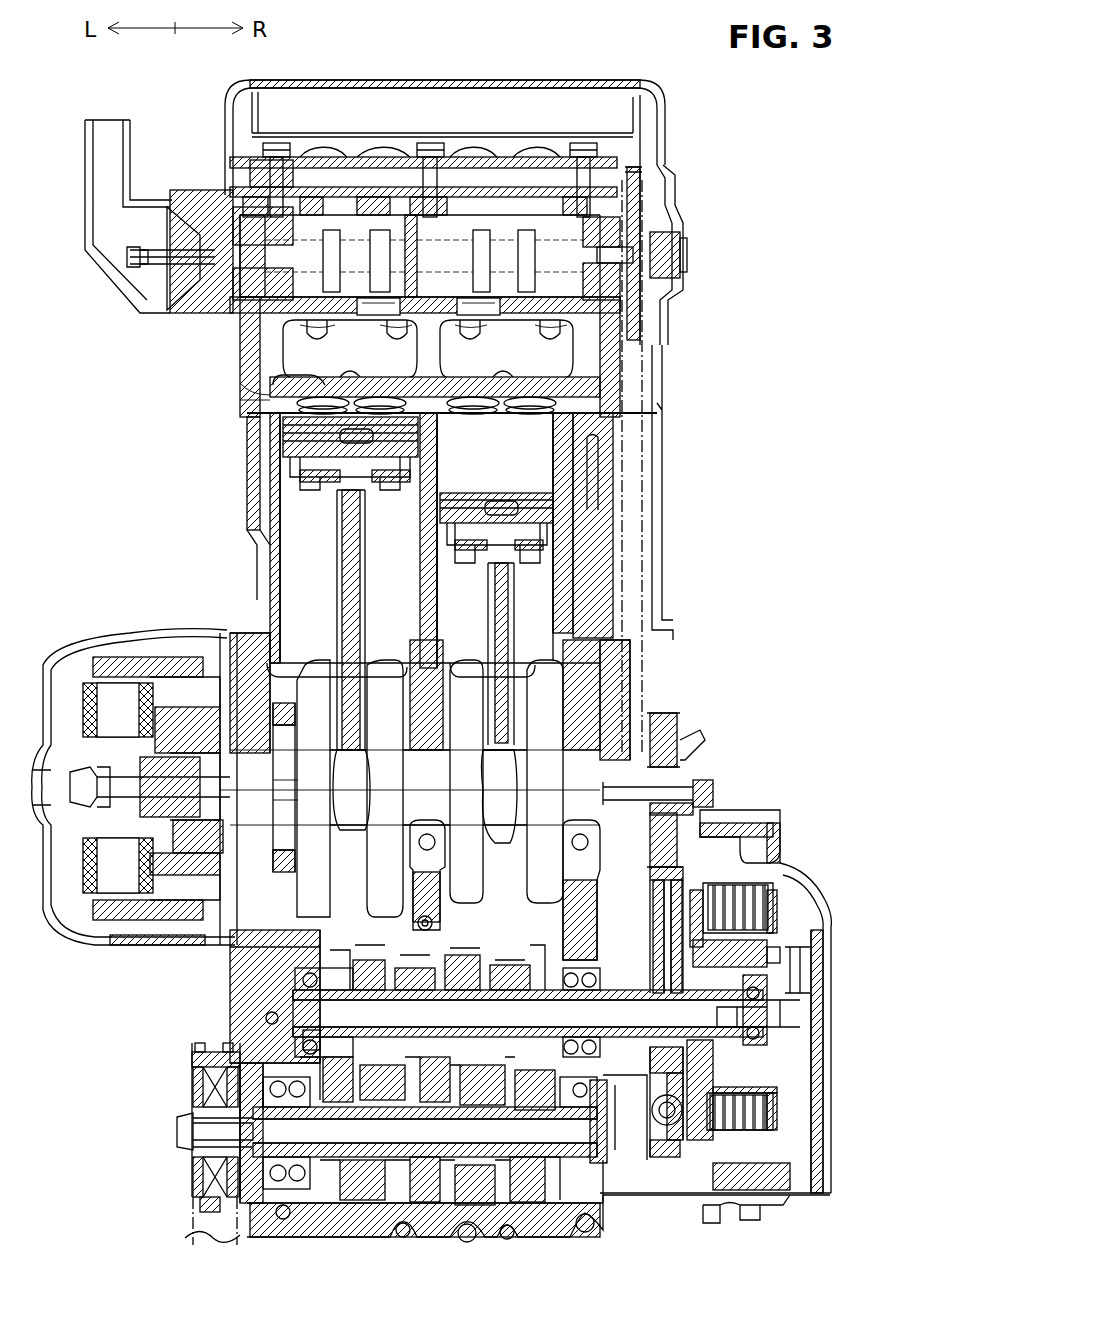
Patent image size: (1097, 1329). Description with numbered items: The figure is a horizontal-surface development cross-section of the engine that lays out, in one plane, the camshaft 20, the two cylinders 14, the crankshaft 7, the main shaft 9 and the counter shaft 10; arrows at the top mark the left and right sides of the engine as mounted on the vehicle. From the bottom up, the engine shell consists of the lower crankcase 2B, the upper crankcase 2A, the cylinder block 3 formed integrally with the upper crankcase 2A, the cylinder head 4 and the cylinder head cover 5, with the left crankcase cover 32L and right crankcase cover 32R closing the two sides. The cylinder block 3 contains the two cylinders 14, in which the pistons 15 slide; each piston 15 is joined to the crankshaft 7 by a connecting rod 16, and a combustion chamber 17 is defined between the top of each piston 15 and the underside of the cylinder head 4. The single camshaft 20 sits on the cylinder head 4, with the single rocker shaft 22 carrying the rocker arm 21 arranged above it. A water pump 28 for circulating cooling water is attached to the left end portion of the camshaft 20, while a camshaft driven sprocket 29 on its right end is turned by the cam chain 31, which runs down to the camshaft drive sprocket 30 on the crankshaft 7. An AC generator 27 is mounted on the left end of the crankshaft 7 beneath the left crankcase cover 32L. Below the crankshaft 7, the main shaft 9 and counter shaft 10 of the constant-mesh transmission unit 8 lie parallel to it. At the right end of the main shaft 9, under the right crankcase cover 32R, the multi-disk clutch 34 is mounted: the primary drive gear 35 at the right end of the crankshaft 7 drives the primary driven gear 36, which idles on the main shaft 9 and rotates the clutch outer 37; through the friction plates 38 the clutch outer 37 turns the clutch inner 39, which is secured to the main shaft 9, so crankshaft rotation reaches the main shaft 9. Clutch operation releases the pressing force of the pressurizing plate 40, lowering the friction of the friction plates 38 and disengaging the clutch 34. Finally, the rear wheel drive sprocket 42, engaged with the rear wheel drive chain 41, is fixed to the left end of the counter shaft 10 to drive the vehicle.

The upper crankcase 2A is at (243, 633).
The lower crankcase 2B is at (260, 957).
The cylinder block 3 is at (270, 507).
The cylinder head 4 is at (242, 350).
The cylinder head cover 5 is at (337, 80).
The crankshaft 7 is at (570, 775).
The transmission unit 8 is at (624, 1150).
The main shaft 9 is at (273, 997).
The counter shaft 10 is at (243, 1115).
The cylinders 14 is at (403, 617).
The piston 15 is at (303, 430).
The connecting rod 16 is at (347, 547).
The combustion chamber 17 is at (270, 387).
The camshaft 20 is at (550, 270).
The rocker arm 21 is at (490, 155).
The rocker shaft 22 is at (548, 155).
The AC generator 27 is at (90, 645).
The water pump 28 is at (135, 268).
The camshaft driven sprocket 29 is at (633, 200).
The camshaft drive sprocket 30 is at (630, 758).
The cam chain 31 is at (642, 473).
The left crankcase cover 32L is at (73, 933).
The right crankcase cover 32R is at (833, 993).
The multi-disk clutch 34 is at (786, 896).
The primary drive gear 35 is at (700, 813).
The primary driven gear 36 is at (667, 840).
The clutch outer 37 is at (767, 892).
The friction plates 38 is at (740, 1117).
The clutch inner 39 is at (720, 1062).
The pressurizing plate 40 is at (707, 1077).
The rear wheel drive chain 41 is at (197, 1225).
The rear wheel drive sprocket 42 is at (200, 1210).